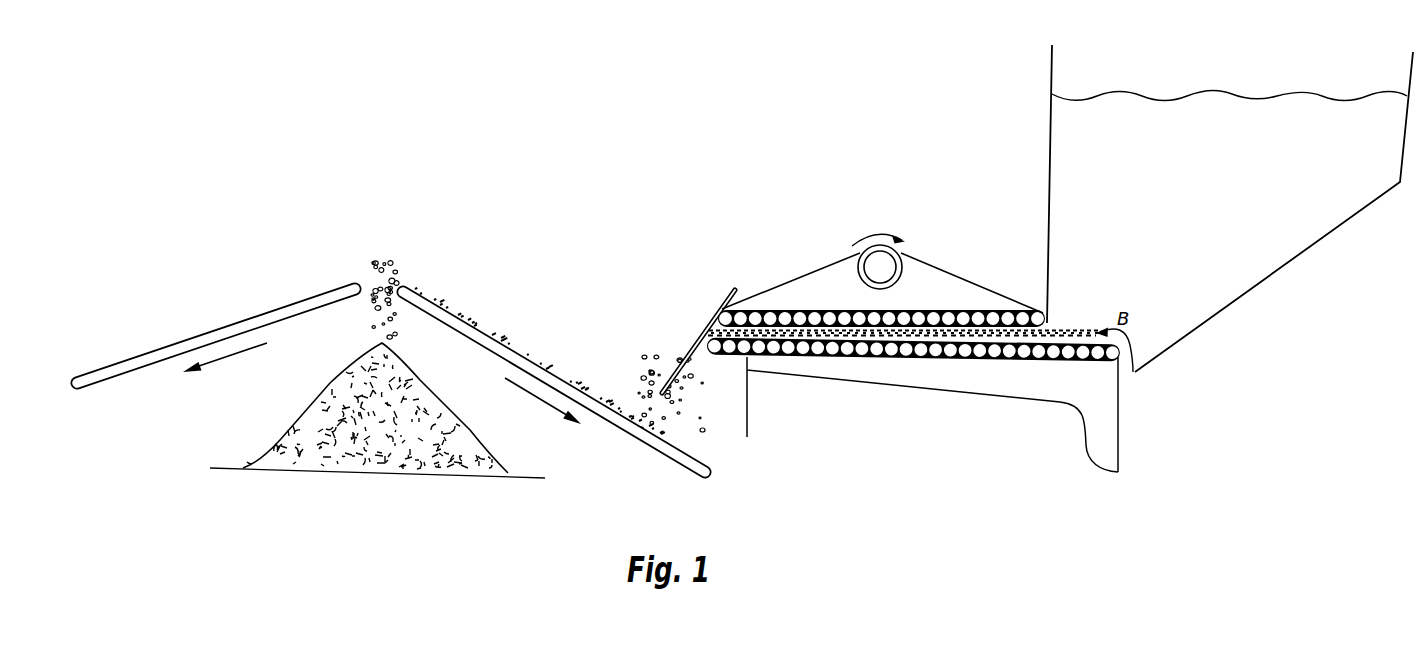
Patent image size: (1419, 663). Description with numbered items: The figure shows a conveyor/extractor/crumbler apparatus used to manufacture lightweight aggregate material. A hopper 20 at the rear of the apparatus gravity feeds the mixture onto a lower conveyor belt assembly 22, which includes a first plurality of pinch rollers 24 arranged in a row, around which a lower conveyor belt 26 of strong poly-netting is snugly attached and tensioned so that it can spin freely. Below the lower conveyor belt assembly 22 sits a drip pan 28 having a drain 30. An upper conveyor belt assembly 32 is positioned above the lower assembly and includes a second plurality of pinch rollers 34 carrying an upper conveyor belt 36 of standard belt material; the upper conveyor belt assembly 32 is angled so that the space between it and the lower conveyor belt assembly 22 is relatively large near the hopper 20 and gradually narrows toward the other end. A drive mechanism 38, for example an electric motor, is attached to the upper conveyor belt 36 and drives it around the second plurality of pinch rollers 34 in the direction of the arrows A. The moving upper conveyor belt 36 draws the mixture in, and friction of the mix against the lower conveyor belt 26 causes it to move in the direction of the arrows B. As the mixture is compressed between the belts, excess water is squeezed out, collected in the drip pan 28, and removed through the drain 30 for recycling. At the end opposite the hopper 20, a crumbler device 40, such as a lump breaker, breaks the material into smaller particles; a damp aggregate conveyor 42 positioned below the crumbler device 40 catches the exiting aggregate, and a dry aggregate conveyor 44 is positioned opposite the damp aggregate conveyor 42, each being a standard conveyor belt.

The hopper 20 is at (1280, 270).
The lower conveyor belt assembly 22 is at (912, 393).
The first plurality of pinch rollers 24 is at (1053, 358).
The lower conveyor belt 26 is at (815, 358).
The drip pan 28 is at (1103, 415).
The drain 30 is at (1120, 457).
The upper conveyor belt assembly 32 is at (881, 279).
The second plurality of pinch rollers 34 is at (901, 318).
The upper conveyor belt 36 is at (997, 292).
The drive mechanism 38 is at (878, 266).
The crumbler device 40 is at (727, 298).
The damp aggregate conveyor 42 is at (515, 334).
The dry aggregate conveyor 44 is at (242, 317).